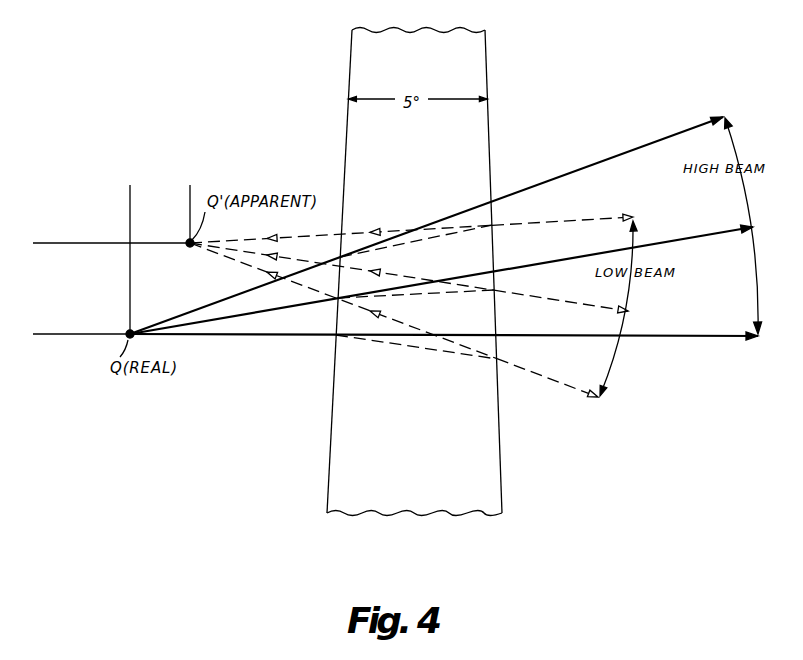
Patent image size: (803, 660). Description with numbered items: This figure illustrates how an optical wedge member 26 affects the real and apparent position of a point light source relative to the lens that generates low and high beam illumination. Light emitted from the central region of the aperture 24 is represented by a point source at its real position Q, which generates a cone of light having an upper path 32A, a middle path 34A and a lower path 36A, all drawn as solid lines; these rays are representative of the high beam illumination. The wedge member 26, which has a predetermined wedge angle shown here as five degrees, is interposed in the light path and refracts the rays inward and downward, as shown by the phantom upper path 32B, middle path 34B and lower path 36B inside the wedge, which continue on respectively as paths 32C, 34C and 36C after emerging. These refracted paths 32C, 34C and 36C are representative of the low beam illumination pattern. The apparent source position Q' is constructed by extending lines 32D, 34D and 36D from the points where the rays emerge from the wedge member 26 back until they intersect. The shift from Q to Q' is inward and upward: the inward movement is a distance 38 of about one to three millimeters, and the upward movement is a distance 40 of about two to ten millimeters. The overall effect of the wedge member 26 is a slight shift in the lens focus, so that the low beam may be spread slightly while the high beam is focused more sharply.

The aperture 24 is at (100, 229).
The optical wedge member 26 is at (500, 447).
The upper path 32A is at (547, 180).
The upper path 32B is at (412, 248).
The upper path 32C is at (580, 218).
The extension line 32D is at (380, 232).
The middle path 34A is at (675, 240).
The middle path 34B is at (460, 299).
The middle path 34C is at (552, 299).
The extension line 34D is at (381, 274).
The lower path 36A is at (668, 335).
The lower path 36B is at (413, 350).
The lower path 36C is at (561, 381).
The extension line 36D is at (403, 324).
The distance 38 is at (190, 192).
The distance 40 is at (45, 243).